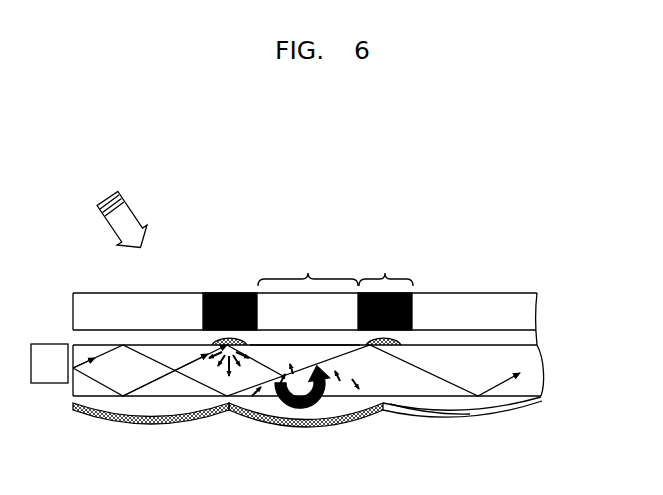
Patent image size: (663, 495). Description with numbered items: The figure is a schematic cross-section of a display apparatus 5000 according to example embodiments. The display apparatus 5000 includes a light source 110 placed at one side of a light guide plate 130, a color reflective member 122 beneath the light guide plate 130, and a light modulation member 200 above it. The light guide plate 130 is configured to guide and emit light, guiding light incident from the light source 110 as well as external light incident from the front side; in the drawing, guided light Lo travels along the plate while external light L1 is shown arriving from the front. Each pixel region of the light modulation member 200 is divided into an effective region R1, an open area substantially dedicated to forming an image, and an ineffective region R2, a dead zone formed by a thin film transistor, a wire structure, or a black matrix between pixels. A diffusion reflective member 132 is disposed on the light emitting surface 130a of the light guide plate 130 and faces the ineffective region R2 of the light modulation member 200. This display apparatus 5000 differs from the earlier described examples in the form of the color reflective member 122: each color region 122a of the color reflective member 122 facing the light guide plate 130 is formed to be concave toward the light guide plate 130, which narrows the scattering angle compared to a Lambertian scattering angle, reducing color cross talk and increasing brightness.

The display apparatus 5000 is at (489, 200).
The light modulation member 200 is at (560, 288).
The diffusion reflective member 132 is at (413, 313).
The effective region R1 is at (308, 267).
The ineffective region R2 is at (386, 267).
The light guide plate 130 is at (560, 340).
The light emitting surface 130a is at (478, 343).
The guided light Lo is at (296, 370).
The light source 110 is at (50, 385).
The color reflective member 122 is at (560, 407).
The color region 122a is at (427, 406).
The external light L1 is at (131, 209).